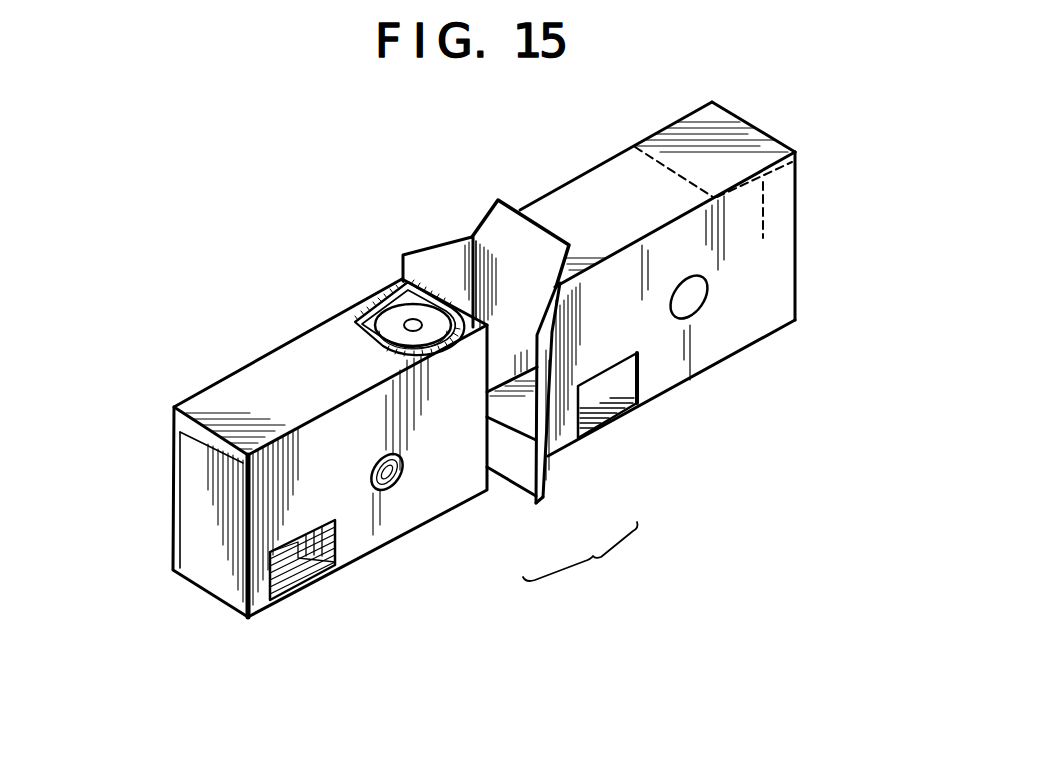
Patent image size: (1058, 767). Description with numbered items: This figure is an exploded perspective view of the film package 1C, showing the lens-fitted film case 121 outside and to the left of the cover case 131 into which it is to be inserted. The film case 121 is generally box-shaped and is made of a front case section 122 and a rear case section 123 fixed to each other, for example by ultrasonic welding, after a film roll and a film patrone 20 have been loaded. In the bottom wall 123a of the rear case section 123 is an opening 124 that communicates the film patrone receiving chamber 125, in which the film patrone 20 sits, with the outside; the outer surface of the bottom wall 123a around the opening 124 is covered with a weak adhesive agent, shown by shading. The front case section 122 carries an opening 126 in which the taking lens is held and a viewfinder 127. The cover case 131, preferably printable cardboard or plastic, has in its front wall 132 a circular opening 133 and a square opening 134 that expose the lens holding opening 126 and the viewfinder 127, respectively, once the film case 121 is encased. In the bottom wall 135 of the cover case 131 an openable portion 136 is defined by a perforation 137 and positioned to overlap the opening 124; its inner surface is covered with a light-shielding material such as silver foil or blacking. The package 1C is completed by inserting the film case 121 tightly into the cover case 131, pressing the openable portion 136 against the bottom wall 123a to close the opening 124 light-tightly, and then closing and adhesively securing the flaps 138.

The film patrone 20 is at (393, 325).
The lens-fitted film case 121 is at (470, 524).
The front case section 122 is at (213, 572).
The rear case section 123 is at (173, 470).
The bottom wall of the rear case section 123a is at (268, 380).
The opening 124 is at (375, 305).
The film patrone receiving chamber 125 is at (407, 290).
The opening (lens holding opening) 126 is at (395, 492).
The viewfinder 127 is at (305, 572).
The cover case 131 is at (604, 445).
The front wall 132 is at (752, 320).
The circular opening 133 is at (698, 318).
The square opening 134 is at (637, 397).
The bottom wall of the cover case 135 is at (570, 203).
The openable portion 136 is at (740, 145).
The perforation 137 is at (713, 211).
The flaps 138 is at (498, 200).
The film package 1C is at (580, 555).